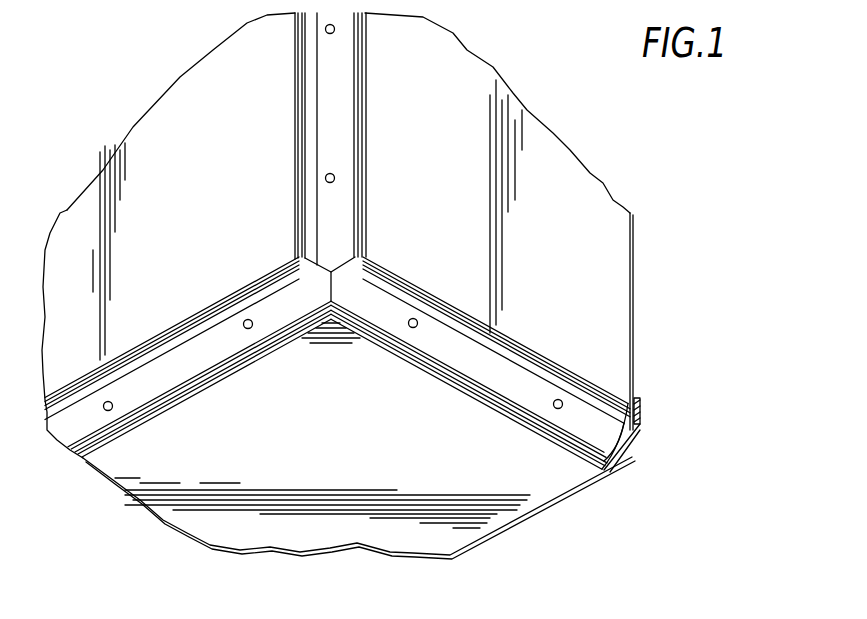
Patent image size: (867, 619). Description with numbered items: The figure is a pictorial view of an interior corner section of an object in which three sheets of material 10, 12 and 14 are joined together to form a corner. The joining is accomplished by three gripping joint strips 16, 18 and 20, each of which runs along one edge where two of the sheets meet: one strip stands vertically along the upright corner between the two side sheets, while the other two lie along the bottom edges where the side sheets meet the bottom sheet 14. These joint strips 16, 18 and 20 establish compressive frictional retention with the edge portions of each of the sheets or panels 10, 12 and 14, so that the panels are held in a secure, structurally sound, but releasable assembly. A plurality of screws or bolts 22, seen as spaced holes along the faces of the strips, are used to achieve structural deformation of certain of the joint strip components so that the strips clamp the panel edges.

The sheet of material 10 is at (141, 147).
The sheet of material 12 is at (583, 202).
The sheet of material 14 is at (487, 512).
The joint strip 16 is at (347, 125).
The joint strip 18 is at (182, 384).
The joint strip 20 is at (502, 390).
The screws or bolts 22 is at (325, 178).